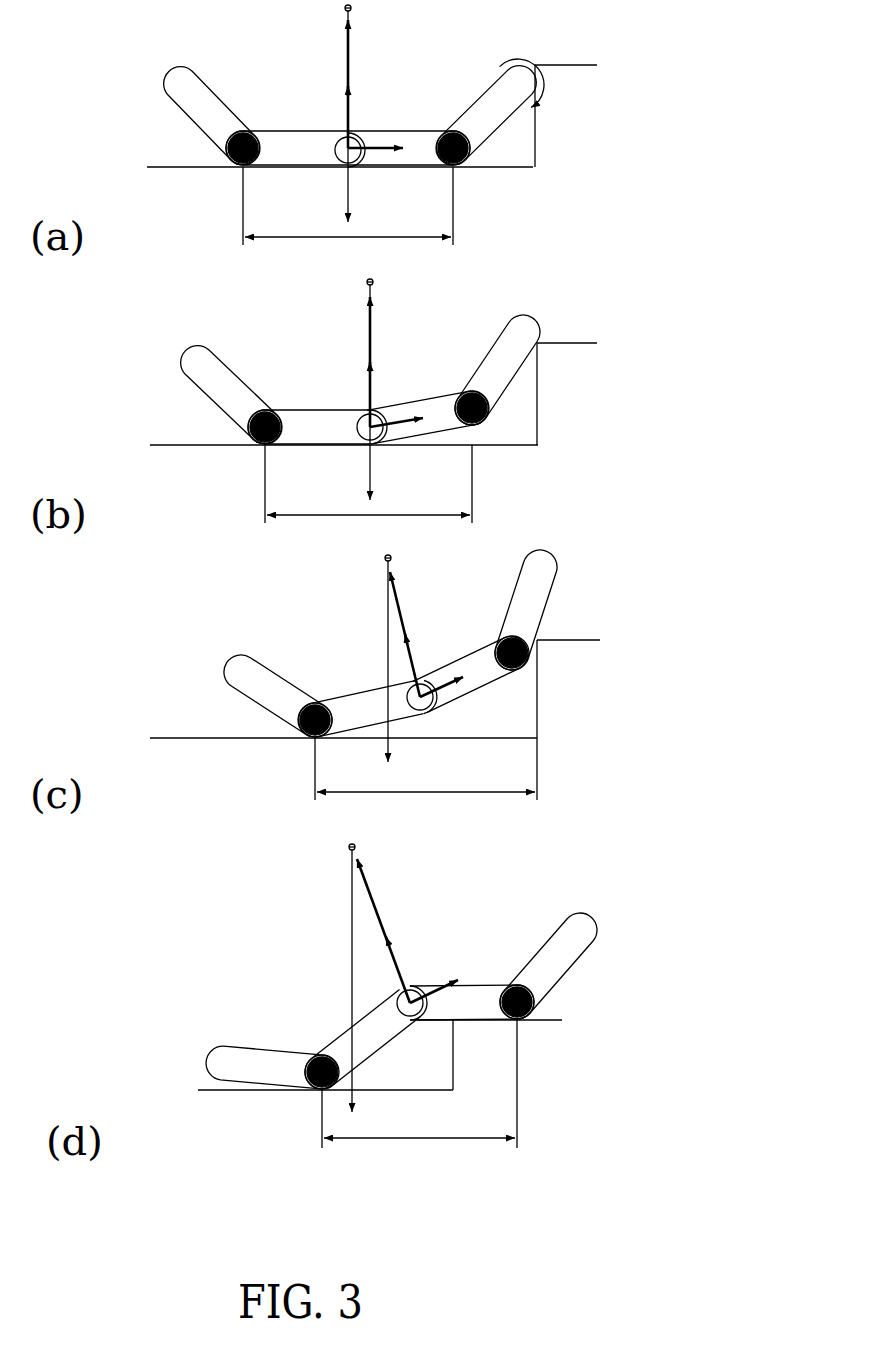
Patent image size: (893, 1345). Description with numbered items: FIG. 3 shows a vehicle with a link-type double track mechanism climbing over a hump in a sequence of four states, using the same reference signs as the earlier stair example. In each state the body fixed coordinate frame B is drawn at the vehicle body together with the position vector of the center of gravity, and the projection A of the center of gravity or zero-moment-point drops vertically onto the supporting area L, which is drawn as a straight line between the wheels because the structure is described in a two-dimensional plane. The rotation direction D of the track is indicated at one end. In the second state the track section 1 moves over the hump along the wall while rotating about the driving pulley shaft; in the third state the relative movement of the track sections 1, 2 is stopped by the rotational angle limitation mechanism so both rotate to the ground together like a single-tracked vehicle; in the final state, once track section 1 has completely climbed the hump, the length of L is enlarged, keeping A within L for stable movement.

The track section 1 is at (490, 526).
The track section 2 is at (261, 562).
The projection of the center of gravity A is at (373, 559).
The body fixed coordinate frame B is at (387, 511).
The rotation direction of the track D is at (522, 78).
The supporting area of the track section L is at (390, 657).